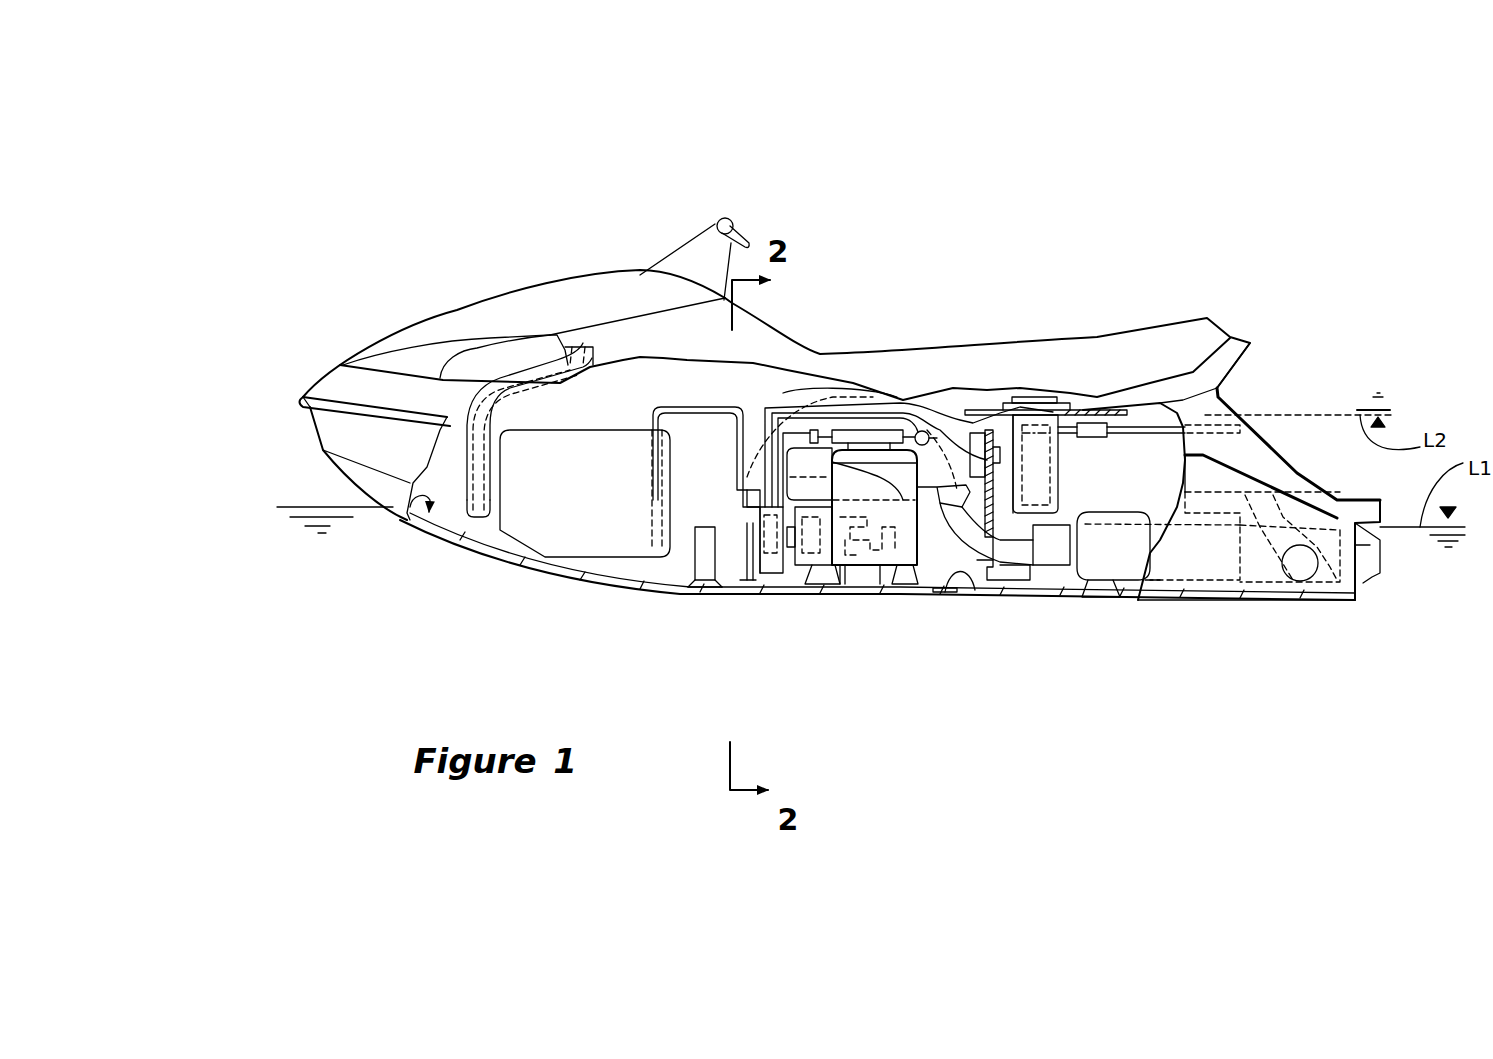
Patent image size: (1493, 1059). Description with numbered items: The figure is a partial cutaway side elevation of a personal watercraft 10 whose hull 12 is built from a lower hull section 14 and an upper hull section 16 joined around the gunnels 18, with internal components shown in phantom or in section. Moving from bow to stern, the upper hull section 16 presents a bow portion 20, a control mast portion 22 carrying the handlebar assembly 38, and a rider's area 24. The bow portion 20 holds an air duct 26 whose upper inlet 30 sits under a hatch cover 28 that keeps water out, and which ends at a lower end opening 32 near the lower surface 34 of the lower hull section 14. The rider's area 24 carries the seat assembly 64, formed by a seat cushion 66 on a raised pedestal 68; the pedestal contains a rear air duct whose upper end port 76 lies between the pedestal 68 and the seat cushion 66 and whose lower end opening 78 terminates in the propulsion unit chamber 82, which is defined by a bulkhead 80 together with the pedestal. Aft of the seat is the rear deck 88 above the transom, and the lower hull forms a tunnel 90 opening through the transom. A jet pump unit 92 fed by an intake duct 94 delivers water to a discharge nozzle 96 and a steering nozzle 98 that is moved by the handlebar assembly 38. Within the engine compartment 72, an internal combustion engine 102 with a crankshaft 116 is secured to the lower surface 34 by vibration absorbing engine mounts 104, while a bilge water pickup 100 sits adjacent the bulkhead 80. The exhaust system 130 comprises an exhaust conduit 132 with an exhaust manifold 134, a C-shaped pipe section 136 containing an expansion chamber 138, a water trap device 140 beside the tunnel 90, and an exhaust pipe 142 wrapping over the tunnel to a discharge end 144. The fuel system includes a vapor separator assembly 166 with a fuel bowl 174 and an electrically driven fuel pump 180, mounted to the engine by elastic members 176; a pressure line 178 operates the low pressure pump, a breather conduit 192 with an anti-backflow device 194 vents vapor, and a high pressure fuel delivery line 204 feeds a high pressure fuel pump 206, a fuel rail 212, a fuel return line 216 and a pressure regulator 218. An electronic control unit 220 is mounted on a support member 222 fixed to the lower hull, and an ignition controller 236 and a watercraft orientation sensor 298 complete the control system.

The watercraft 10 is at (424, 194).
The hull 12 is at (207, 343).
The lower hull section 14 is at (516, 572).
The upper hull section 16 is at (322, 380).
The gunnels 18 is at (292, 405).
The bow portion 20 is at (529, 268).
The control mast portion 22 is at (644, 216).
The rider's area 24 is at (1020, 212).
The air duct 26 is at (470, 497).
The hatch cover 28 is at (457, 310).
The upper inlet 30 is at (596, 346).
The lower end opening 32 is at (477, 527).
The lower surface 34 is at (430, 505).
The handlebar assembly 38 is at (721, 220).
The seat assembly 64 is at (1258, 292).
The seat cushion 66 is at (1035, 412).
The raised pedestal 68 is at (1223, 392).
The engine compartment 72 is at (857, 600).
The upper end port 76 is at (1062, 410).
The lower end opening 78 is at (1040, 582).
The bulkhead 80 is at (997, 562).
The propulsion unit chamber 82 is at (1142, 573).
The rear deck 88 is at (1355, 495).
The tunnel 90 is at (1070, 513).
The jet pump unit 92 is at (1255, 595).
The intake duct 94 is at (1105, 600).
The discharge nozzle 96 is at (1318, 582).
The steering nozzle 98 is at (1370, 563).
The water pickup 100 is at (966, 580).
The internal combustion engine 102 is at (933, 485).
The engine mounts 104 is at (812, 598).
The crankshaft 116 is at (837, 582).
The exhaust system 130 is at (866, 390).
The exhaust conduit 132 is at (797, 390).
The exhaust manifold 134 is at (875, 578).
The C-shaped pipe section 136 is at (768, 430).
The expansion chamber 138 is at (930, 430).
The water trap device 140 is at (1150, 500).
The exhaust pipe 142 is at (1213, 483).
The discharge end 144 is at (1290, 582).
The vapor separator assembly 166 is at (720, 472).
The fuel bowl 174 is at (762, 585).
The elastic members 176 is at (784, 578).
The pressure line 178 is at (745, 610).
The electrically driven fuel pump 180 is at (745, 555).
The breather conduit 192 is at (978, 452).
The anti-backflow device 194 is at (1090, 428).
The high pressure fuel delivery line 204 is at (808, 430).
The high pressure fuel pump 206 is at (777, 423).
The fuel rail 212 is at (840, 430).
The fuel return line 216 is at (899, 430).
The pressure regulator 218 is at (933, 432).
The electronic control unit 220 is at (697, 562).
The support member 222 is at (693, 597).
The controller 236 is at (985, 407).
The watercraft orientation sensor 298 is at (1033, 432).